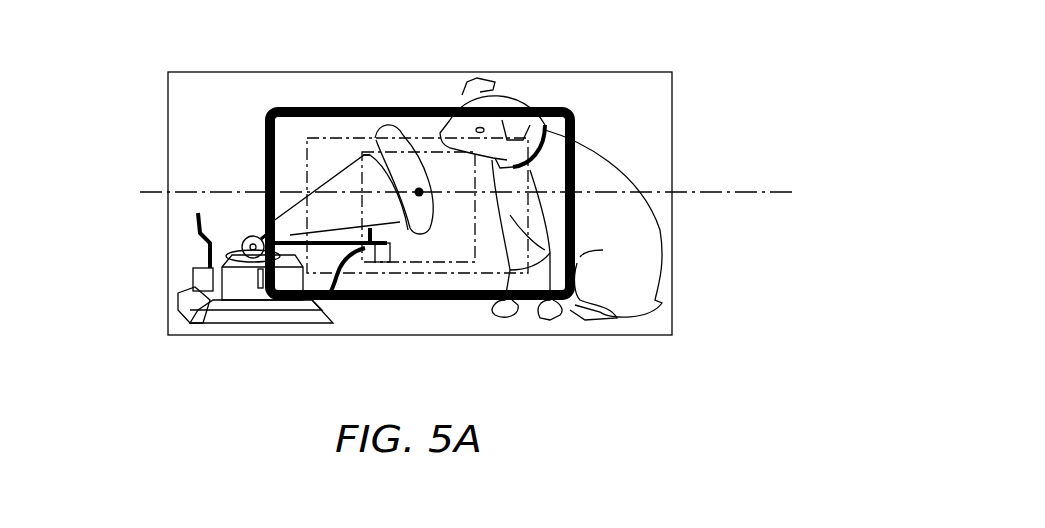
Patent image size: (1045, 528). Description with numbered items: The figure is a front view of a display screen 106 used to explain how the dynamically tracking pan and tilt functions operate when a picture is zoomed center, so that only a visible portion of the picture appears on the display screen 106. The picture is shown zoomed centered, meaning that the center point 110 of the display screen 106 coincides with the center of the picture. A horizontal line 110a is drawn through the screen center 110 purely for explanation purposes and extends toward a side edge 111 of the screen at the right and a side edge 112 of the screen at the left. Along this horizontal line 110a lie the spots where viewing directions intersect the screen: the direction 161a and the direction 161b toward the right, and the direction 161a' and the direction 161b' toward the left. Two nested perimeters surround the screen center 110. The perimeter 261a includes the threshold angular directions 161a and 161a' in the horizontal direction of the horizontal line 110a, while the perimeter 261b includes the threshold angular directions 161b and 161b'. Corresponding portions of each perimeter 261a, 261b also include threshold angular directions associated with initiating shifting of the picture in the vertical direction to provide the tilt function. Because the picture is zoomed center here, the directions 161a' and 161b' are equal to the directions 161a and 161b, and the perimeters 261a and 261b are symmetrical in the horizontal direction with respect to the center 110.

The side edge 112 is at (267, 140).
The side edge 111 is at (575, 132).
The horizontal line 110a is at (755, 193).
The perimeter 261b is at (323, 138).
The perimeter 261a is at (432, 152).
The direction 161a' is at (212, 187).
The direction 161b' is at (227, 216).
The center point 110 is at (419, 196).
The display screen 106 is at (367, 302).
The direction 161a is at (602, 130).
The direction 161b is at (628, 225).